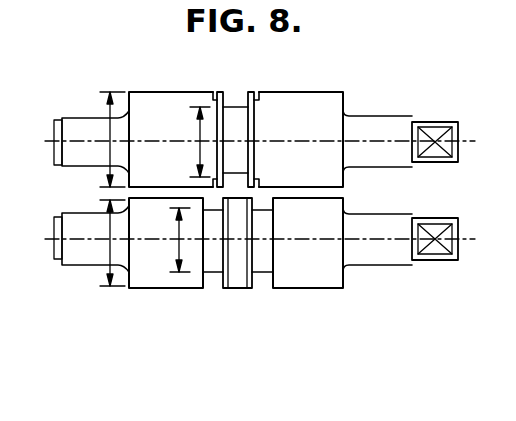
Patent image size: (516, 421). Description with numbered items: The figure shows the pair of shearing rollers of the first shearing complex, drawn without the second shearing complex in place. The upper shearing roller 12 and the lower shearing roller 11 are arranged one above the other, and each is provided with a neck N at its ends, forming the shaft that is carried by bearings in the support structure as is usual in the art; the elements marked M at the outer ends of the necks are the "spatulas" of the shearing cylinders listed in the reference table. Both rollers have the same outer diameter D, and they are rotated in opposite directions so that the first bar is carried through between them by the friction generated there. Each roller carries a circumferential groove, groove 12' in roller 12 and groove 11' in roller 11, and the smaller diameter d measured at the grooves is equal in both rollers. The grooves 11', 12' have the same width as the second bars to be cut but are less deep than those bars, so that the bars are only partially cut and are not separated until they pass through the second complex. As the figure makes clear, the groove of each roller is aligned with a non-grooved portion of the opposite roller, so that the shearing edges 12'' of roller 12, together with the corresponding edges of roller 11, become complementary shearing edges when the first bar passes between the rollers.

The shearing roller 12 is at (240, 119).
The circumferential groove 12' is at (237, 117).
The shearing edge 12'' is at (241, 120).
The shearing roller 11 is at (236, 266).
The circumferential groove 11' is at (238, 263).
The neck N is at (78, 150).
The spatulas of shearing cylinders M is at (430, 152).
The outer diameter D is at (108, 189).
The groove diameter d is at (185, 189).